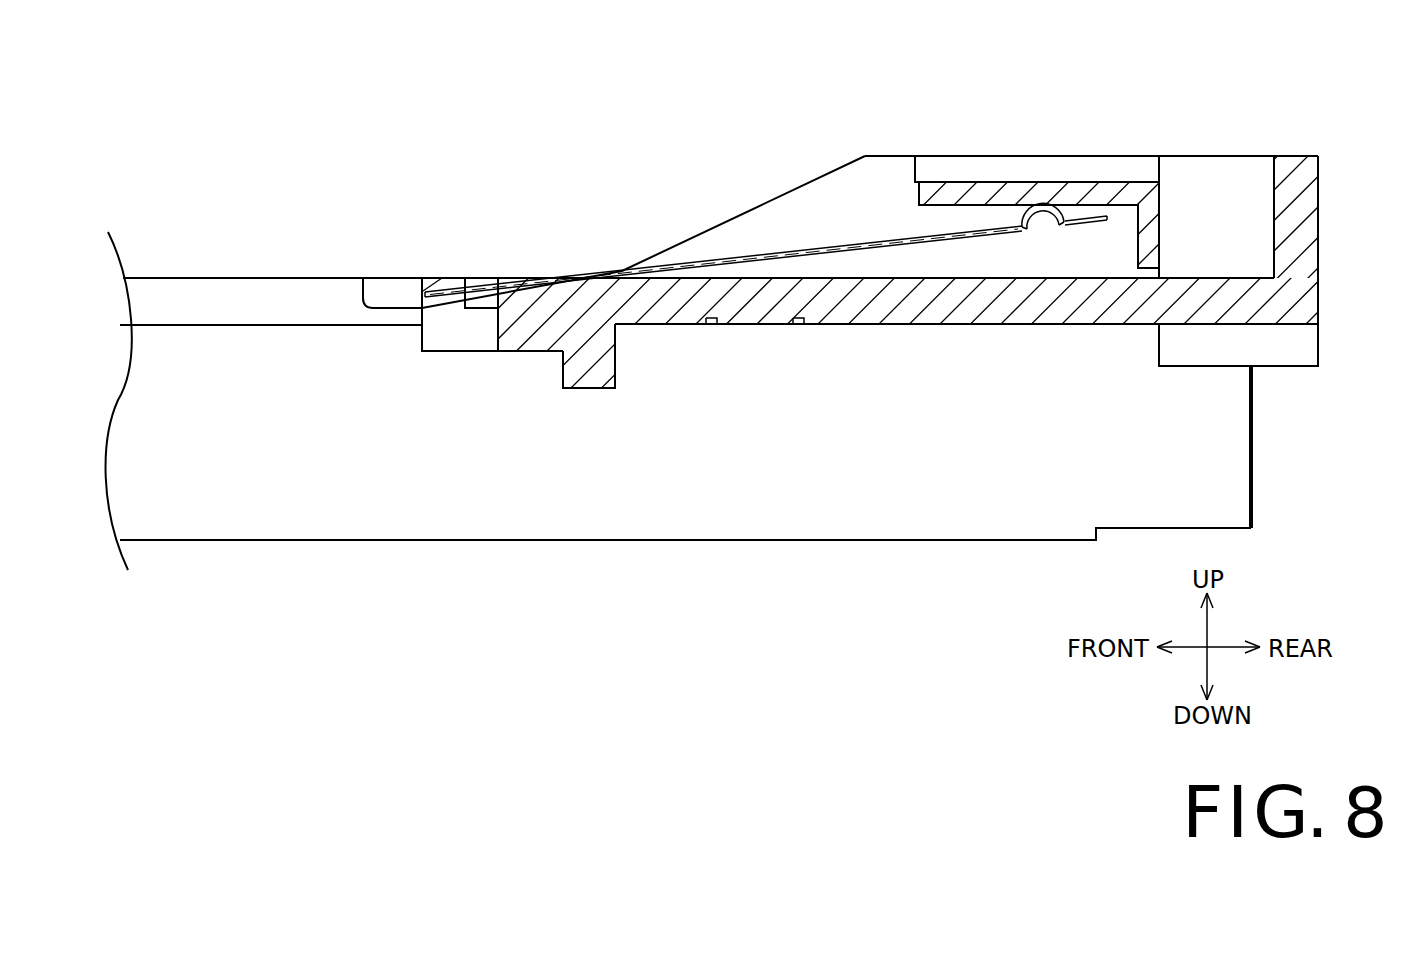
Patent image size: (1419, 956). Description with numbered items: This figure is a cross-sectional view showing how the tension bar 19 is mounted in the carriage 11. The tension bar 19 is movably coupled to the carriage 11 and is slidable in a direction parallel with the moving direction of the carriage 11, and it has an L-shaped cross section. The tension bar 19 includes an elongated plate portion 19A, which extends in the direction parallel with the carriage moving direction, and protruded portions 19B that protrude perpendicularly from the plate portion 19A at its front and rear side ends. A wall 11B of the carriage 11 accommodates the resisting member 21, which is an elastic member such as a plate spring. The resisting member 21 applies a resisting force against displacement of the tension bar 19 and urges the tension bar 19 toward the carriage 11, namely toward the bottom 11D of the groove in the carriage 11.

The carriage 11 is at (920, 256).
The wall 11B is at (1218, 155).
The bottom of the groove 11D is at (912, 357).
The tension bar 19 is at (873, 325).
The plate portion 19A is at (1000, 325).
The protruded portion 19B is at (1295, 203).
The resisting member 21 is at (775, 253).